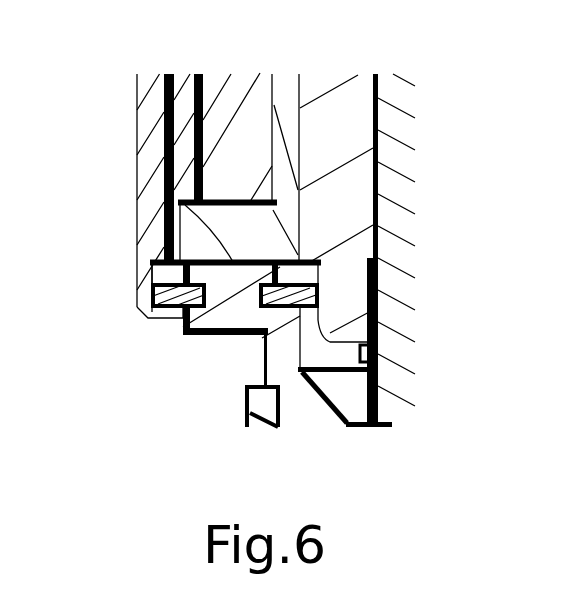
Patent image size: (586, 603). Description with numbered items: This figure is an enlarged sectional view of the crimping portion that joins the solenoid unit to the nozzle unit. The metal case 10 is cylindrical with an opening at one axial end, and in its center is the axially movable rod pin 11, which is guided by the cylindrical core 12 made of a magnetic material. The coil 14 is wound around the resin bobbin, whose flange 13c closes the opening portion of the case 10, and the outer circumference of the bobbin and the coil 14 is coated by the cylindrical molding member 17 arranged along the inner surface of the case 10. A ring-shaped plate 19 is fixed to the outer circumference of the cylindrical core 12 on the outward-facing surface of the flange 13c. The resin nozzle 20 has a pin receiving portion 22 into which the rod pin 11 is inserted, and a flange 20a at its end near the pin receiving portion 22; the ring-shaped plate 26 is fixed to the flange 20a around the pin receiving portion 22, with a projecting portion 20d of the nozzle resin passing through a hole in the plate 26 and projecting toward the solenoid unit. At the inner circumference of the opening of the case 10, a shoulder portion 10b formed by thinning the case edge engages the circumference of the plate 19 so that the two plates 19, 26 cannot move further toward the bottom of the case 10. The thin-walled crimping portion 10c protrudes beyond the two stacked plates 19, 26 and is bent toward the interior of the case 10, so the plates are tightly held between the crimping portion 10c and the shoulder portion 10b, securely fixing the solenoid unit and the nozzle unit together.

The case 10 is at (157, 78).
The shoulder portion 10b is at (156, 262).
The crimping portion 10c is at (160, 318).
The rod pin 11 is at (400, 120).
The cylindrical core 12 is at (323, 142).
The flange 13c is at (230, 213).
The coil 14 is at (255, 117).
The molding member 17 is at (188, 93).
The plate 19 is at (152, 284).
The nozzle 20 is at (312, 408).
The flange 20a is at (225, 320).
The projecting portion 20d is at (182, 200).
The pin receiving portion 22 is at (357, 388).
The plate 26 is at (162, 298).